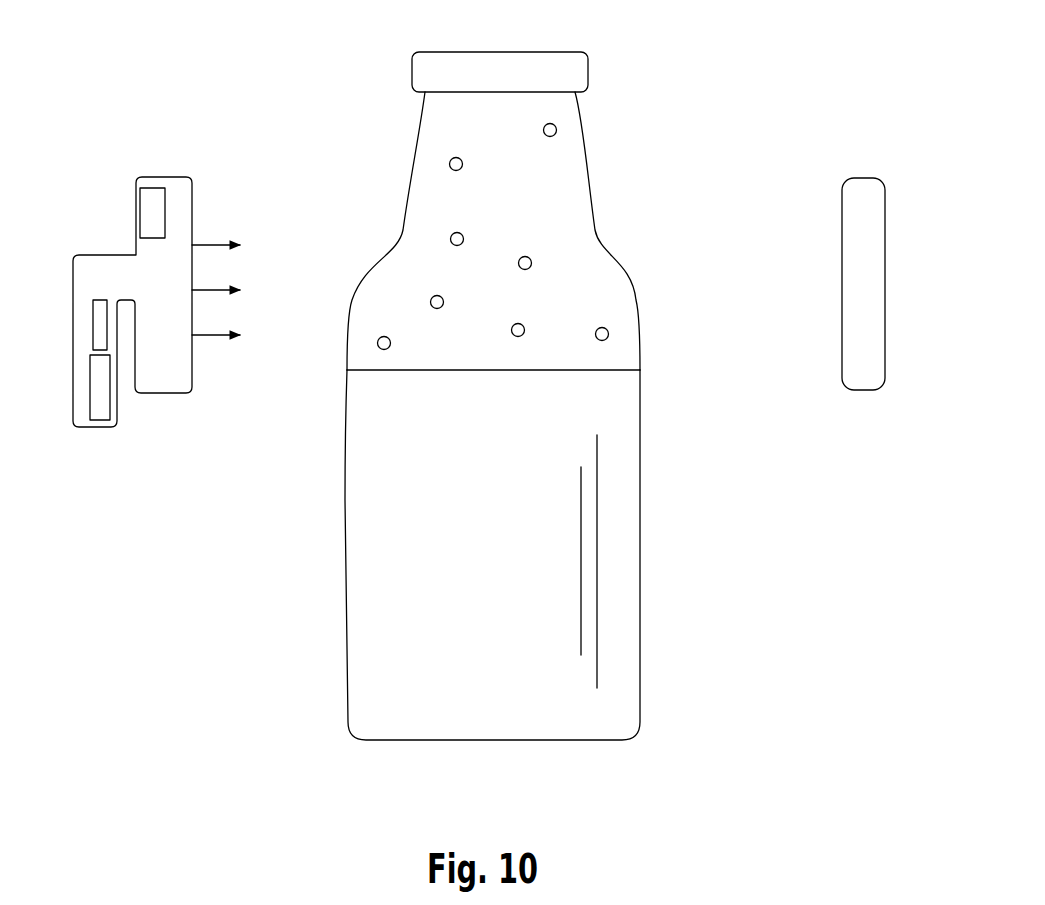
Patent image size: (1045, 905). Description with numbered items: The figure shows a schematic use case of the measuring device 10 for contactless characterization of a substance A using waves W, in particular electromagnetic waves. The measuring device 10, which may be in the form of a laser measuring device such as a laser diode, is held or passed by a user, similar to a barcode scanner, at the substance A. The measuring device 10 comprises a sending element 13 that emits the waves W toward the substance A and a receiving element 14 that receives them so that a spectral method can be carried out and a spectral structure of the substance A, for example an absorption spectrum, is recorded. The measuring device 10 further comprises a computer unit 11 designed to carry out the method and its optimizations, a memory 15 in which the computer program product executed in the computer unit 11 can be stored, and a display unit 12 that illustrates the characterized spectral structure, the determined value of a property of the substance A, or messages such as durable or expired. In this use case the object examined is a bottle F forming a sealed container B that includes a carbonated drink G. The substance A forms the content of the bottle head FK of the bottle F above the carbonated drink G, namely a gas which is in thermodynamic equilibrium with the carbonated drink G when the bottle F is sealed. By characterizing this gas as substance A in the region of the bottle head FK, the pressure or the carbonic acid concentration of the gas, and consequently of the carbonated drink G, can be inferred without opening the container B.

The measuring device 10 is at (128, 124).
The computer unit 11 is at (100, 415).
The display unit 12 is at (153, 212).
The sending element 13 is at (177, 382).
The receiving element 14 is at (858, 362).
The memory 15 is at (92, 332).
The waves W is at (212, 337).
The bottle head FK is at (587, 140).
The substance A is at (545, 213).
The sealed container B is at (645, 337).
The bottle F is at (638, 576).
The carbonated drink G is at (612, 700).